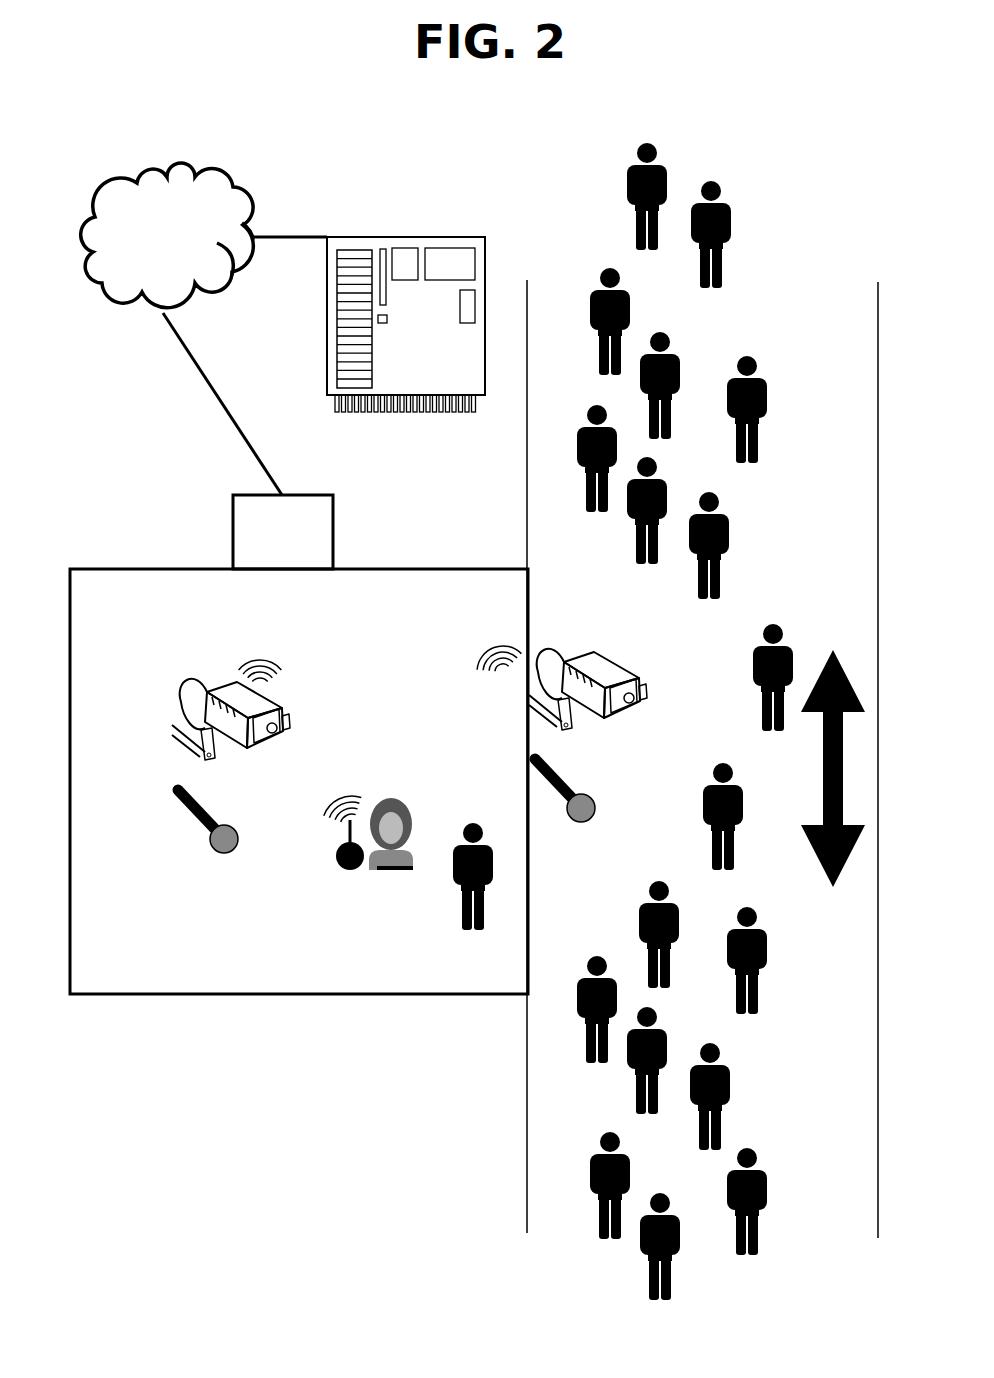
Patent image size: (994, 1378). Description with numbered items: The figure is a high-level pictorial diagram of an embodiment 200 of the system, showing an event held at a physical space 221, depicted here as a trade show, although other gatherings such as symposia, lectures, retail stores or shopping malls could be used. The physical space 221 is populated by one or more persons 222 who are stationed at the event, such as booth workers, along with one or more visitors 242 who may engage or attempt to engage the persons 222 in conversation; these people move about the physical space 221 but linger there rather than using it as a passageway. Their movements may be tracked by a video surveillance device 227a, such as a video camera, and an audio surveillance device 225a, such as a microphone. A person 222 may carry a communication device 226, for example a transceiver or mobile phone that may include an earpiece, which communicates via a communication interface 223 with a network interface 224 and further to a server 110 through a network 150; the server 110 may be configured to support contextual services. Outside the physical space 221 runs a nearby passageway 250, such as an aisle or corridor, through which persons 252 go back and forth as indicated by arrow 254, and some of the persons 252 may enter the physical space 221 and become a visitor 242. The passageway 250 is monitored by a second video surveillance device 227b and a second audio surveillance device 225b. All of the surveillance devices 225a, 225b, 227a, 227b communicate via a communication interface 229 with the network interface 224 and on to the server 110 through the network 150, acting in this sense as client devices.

The embodiment of system 200 is at (490, 95).
The network 150 is at (167, 235).
The server 110 is at (406, 324).
The network interface 224 is at (283, 532).
The physical space 221 is at (122, 569).
The video surveillance device 227a is at (190, 680).
The video surveillance device 227b is at (608, 657).
The communication interface 229 is at (282, 671).
The audio surveillance device 225a is at (170, 796).
The audio surveillance device 225b is at (570, 777).
The communication interface 223 is at (358, 796).
The person 222 is at (402, 815).
The communication device 226 is at (337, 858).
The visitor 242 is at (462, 930).
The passageway 250 is at (527, 1115).
The persons 252 is at (630, 205).
The arrow 254 is at (823, 800).